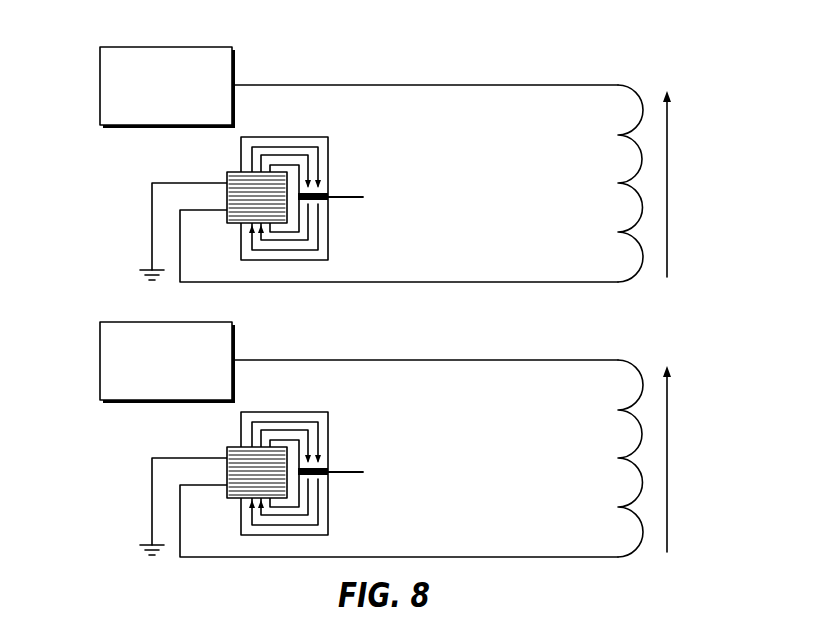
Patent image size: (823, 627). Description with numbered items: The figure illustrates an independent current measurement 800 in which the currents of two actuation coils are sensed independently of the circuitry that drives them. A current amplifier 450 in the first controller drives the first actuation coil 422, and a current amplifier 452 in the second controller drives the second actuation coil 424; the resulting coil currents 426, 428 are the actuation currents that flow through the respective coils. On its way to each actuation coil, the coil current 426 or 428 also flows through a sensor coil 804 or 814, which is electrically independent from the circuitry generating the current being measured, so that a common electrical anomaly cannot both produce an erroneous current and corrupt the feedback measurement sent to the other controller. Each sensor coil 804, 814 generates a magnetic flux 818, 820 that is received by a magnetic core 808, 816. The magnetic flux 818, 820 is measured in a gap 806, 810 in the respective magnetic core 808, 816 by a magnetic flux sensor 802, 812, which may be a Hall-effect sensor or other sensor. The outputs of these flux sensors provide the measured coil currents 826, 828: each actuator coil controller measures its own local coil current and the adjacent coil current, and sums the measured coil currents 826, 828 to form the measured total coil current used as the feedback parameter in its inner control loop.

The independent current measurement 800 is at (390, 287).
The current amplifier 450 is at (100, 62).
The current amplifier 452 is at (132, 355).
The actuation coil 1 422 is at (628, 95).
The actuation coil 2 424 is at (620, 436).
The coil current 426 is at (668, 175).
The coil current 428 is at (707, 459).
The magnetic flux 818 is at (265, 145).
The magnetic flux 820 is at (285, 447).
The magnetic flux sensor 802 is at (322, 188).
The magnetic flux sensor 812 is at (313, 451).
The measured coil current 826 is at (358, 195).
The measured coil current 828 is at (375, 446).
The sensor coil 804 is at (225, 195).
The sensor coil 814 is at (222, 461).
The gap 806 is at (330, 202).
The gap 810 is at (354, 493).
The magnetic core 808 is at (328, 242).
The magnetic core 816 is at (315, 481).